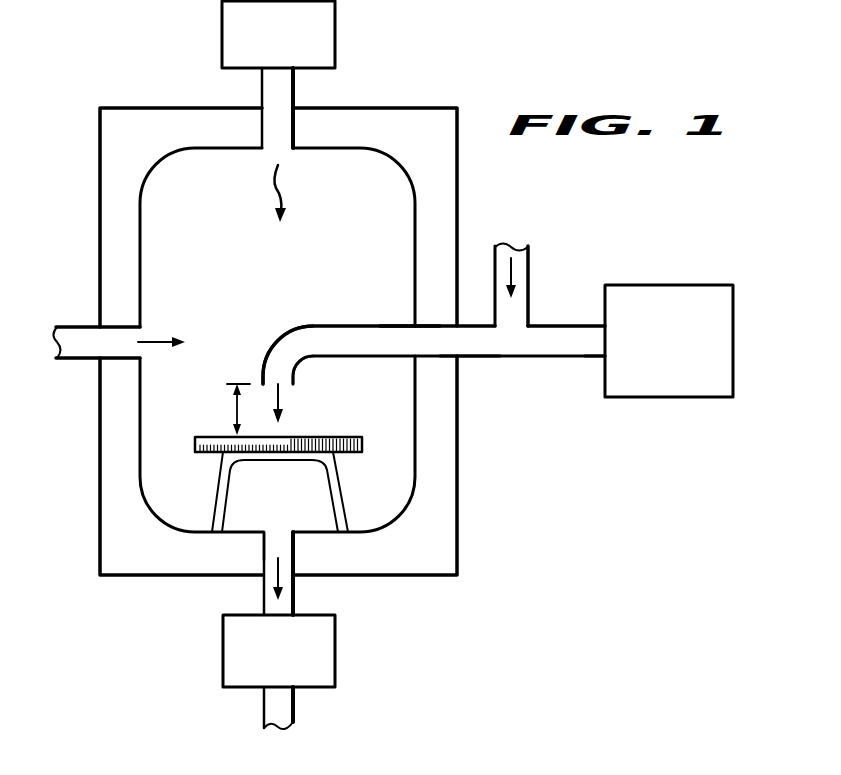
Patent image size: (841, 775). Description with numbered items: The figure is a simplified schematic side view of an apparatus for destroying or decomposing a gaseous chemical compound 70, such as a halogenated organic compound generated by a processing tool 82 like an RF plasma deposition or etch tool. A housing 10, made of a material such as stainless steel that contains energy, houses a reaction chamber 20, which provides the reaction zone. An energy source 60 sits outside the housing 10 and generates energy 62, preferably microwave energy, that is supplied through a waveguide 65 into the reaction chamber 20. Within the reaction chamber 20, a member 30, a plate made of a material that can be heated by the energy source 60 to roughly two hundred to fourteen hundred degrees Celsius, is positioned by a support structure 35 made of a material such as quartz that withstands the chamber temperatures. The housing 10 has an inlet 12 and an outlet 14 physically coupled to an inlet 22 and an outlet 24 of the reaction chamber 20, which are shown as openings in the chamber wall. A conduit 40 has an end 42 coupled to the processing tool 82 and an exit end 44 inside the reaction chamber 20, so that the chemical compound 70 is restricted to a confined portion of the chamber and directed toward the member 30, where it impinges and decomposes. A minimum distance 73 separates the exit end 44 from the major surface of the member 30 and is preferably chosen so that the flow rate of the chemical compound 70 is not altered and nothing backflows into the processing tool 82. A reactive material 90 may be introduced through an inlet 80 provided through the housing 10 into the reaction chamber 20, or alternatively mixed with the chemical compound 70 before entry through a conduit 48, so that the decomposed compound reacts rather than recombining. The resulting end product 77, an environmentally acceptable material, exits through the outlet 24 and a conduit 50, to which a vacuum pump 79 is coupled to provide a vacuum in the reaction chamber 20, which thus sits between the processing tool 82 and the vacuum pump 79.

The housing 10 is at (100, 148).
The inlet 12 is at (460, 357).
The outlet 14 is at (264, 571).
The reaction chamber 20 is at (403, 173).
The inlet 22 is at (409, 326).
The outlet 24 is at (268, 532).
The member 30 is at (195, 447).
The support structure 35 is at (224, 477).
The conduit 40 is at (438, 349).
The end 42 is at (605, 358).
The exit end 44 is at (268, 384).
The conduit 48 is at (530, 249).
The conduit 50 is at (516, 278).
The energy source 60 is at (294, 42).
The energy 62 is at (276, 186).
The waveguide 65 is at (262, 91).
The chemical compound 70 is at (282, 398).
The minimum distance 73 is at (236, 410).
The end product 77 is at (287, 566).
The vacuum pump 79 is at (294, 660).
The inlet 80 is at (80, 360).
The processing tool 82 is at (684, 357).
The reactive material 90 is at (168, 337).